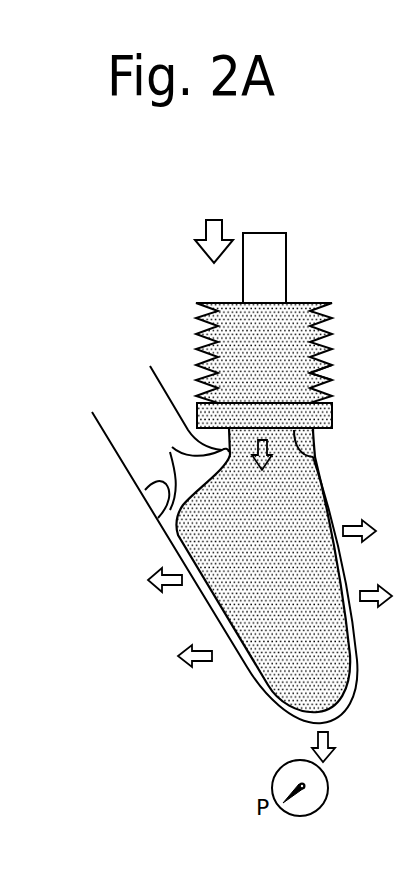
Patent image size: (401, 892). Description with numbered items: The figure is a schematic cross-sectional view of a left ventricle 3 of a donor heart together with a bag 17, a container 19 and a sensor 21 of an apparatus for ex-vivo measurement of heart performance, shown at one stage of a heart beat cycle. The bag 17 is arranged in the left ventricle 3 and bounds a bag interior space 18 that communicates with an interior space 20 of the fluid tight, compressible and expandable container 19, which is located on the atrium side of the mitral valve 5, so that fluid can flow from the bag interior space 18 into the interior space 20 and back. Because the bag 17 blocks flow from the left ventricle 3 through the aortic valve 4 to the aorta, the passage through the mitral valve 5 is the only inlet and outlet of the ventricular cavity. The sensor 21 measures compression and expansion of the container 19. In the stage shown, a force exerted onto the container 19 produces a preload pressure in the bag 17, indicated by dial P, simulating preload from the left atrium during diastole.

The sensor 21 is at (263, 268).
The interior space 20 is at (270, 345).
The container 19 is at (327, 370).
The mitral valve 5 is at (308, 445).
The bag 17 is at (218, 612).
The bag interior space 18 is at (290, 562).
The left ventricle 3 is at (170, 510).
The aortic valve 4 is at (145, 490).